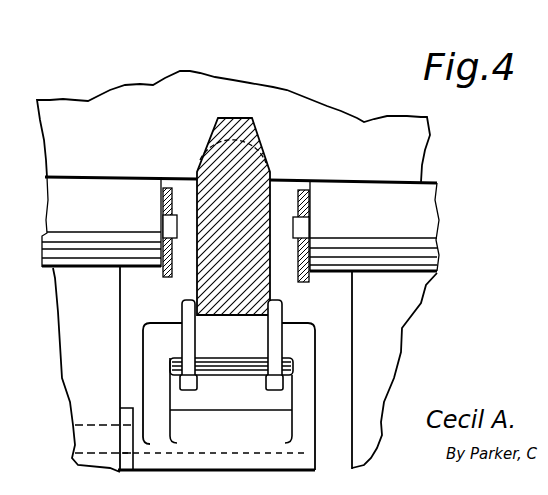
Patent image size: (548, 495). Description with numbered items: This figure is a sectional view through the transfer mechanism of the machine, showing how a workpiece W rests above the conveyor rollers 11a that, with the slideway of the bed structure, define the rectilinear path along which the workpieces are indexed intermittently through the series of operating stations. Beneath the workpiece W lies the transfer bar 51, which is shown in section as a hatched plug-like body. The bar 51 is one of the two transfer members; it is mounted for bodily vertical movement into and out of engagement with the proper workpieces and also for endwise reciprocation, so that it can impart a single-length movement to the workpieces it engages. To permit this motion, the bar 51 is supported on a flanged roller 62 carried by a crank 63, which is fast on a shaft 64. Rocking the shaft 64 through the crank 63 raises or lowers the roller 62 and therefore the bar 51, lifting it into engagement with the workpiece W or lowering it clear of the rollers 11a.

The workpiece W is at (412, 143).
The conveyor rollers 11a is at (424, 211).
The bar 51 is at (277, 180).
The flanged roller 62 is at (232, 366).
The crank 63 is at (311, 387).
The shaft 64 is at (97, 425).